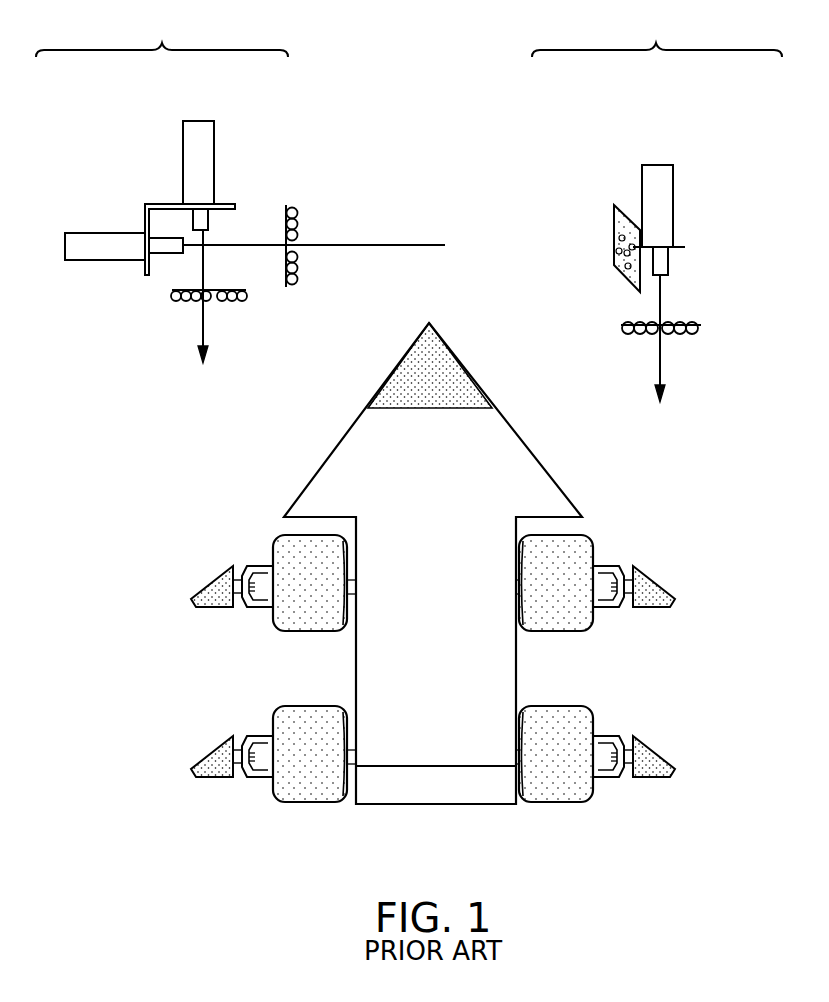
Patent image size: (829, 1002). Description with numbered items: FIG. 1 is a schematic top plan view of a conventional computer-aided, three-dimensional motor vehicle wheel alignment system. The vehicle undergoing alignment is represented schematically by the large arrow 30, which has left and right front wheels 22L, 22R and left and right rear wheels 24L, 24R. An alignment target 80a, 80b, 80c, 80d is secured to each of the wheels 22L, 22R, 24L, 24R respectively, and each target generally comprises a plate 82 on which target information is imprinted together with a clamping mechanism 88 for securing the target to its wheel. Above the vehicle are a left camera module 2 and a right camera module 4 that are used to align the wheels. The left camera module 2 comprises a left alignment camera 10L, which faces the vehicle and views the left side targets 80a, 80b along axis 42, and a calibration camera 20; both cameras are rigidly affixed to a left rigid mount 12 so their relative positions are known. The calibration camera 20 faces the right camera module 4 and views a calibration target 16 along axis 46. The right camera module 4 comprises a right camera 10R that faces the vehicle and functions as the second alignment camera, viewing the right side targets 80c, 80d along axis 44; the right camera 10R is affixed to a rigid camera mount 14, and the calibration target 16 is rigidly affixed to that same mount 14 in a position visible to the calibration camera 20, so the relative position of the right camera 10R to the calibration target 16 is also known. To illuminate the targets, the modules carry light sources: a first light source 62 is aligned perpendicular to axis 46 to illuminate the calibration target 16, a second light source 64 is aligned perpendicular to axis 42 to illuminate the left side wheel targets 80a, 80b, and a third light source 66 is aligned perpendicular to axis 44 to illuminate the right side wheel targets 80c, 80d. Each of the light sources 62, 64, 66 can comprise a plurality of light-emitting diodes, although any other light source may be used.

The left camera module 2 is at (162, 32).
The right camera module 4 is at (657, 32).
The left alignment camera 10L is at (207, 146).
The right camera 10R is at (676, 192).
The left rigid mount 12 is at (141, 197).
The rigid camera mount 14 is at (703, 257).
The calibration target 16 is at (611, 257).
The calibration camera 20 is at (93, 254).
The left front wheel 22L is at (293, 632).
The right front wheel 22R is at (574, 632).
The left rear wheel 24L is at (292, 805).
The right rear wheel 24R is at (570, 805).
The motor vehicle 30 is at (427, 650).
The axis 42 is at (200, 322).
The axis 44 is at (662, 358).
The axis 46 is at (395, 243).
The first light source 62 is at (297, 282).
The second light source 64 is at (172, 292).
The third light source 66 is at (629, 336).
The alignment target 80a is at (208, 588).
The alignment target 80b is at (194, 766).
The alignment target 80c is at (665, 584).
The alignment target 80d is at (666, 759).
The plate 82 is at (233, 570).
The clamping mechanism 88 is at (240, 603).